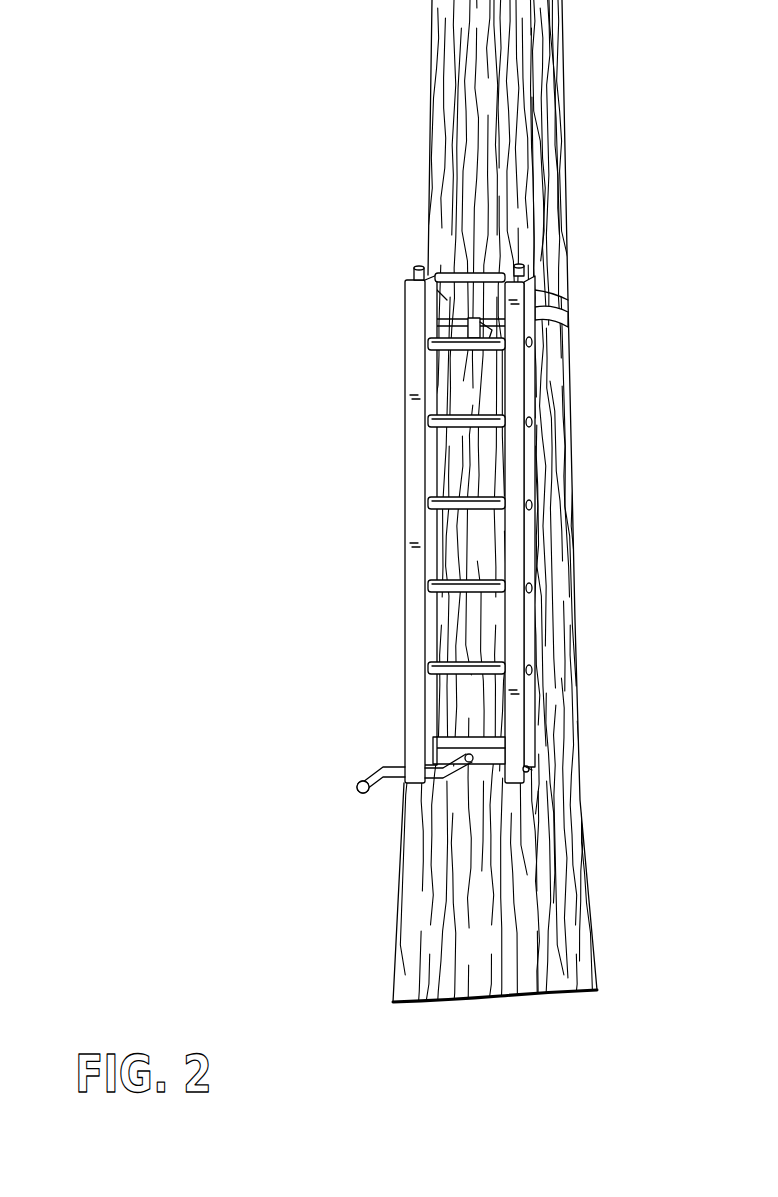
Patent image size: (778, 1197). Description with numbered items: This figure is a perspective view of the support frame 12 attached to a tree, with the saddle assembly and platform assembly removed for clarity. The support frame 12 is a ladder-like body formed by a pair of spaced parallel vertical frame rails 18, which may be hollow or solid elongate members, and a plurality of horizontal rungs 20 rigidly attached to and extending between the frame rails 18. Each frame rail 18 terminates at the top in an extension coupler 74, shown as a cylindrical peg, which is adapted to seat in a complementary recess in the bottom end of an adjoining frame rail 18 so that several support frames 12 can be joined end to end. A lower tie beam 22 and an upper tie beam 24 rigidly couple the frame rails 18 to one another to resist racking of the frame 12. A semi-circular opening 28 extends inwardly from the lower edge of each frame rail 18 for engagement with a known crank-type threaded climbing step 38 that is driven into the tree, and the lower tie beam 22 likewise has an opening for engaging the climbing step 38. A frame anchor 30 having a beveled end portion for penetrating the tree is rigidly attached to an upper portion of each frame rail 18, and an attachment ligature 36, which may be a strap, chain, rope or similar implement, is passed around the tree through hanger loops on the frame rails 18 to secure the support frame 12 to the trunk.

The support frame 12 is at (473, 533).
The frame rails 18 is at (405, 443).
The rungs 20 is at (442, 418).
The lower tie beam 22 is at (460, 750).
The upper tie beam 24 is at (472, 273).
The semi-circular opening 28 is at (410, 770).
The frame anchor 30 is at (437, 295).
The attachment ligature 36 is at (560, 318).
The climbing step 38 is at (442, 783).
The extension coupler 74 is at (416, 267).